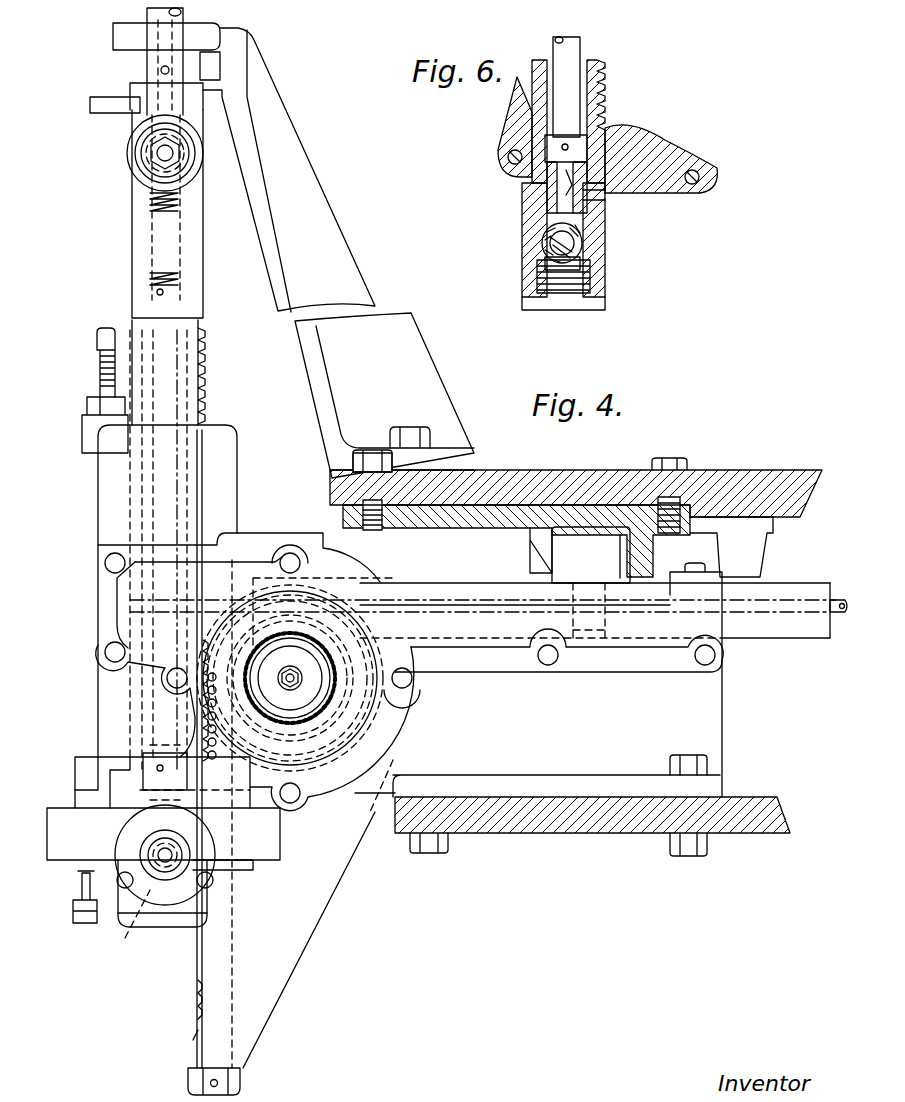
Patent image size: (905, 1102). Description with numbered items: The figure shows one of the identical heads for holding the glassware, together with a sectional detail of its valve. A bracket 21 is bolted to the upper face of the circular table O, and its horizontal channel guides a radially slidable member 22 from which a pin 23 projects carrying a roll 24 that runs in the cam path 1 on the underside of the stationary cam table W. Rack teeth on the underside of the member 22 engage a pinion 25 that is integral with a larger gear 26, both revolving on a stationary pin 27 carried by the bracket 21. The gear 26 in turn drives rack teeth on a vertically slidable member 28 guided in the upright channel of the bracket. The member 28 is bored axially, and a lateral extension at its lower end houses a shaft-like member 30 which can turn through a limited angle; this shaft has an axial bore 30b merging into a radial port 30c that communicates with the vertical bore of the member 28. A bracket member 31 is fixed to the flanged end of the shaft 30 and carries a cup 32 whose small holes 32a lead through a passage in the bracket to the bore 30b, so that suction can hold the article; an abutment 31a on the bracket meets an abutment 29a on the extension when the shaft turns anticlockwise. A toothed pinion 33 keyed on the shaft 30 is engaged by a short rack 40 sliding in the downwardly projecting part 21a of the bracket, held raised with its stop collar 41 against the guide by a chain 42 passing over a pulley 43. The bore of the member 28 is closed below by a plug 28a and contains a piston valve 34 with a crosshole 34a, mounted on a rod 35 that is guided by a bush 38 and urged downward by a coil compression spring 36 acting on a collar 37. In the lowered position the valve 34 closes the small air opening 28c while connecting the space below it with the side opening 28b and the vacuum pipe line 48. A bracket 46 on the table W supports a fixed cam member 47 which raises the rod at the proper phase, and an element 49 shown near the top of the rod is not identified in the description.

In FIG. 4, the cam path 1 is at (553, 503).
In FIG. 4, the bracket 21 is at (708, 724).
In FIG. 6, the bracket 21 is at (612, 130).
In FIG. 4, the downwardly projecting part of the bracket 21a is at (258, 1015).
In FIG. 4, the radially slidable member 22 is at (795, 622).
In FIG. 4, the pin 23 is at (570, 556).
In FIG. 4, the roll 24 is at (617, 577).
In FIG. 4, the pinion 25 is at (352, 700).
In FIG. 4, the gear 26 is at (360, 727).
In FIG. 4, the stationary pin 27 is at (302, 678).
In FIG. 4, the vertically slidable member 28 is at (130, 305).
In FIG. 6, the vertically slidable member 28 is at (602, 82).
In FIG. 6, the plug 28a is at (563, 295).
In FIG. 4, the side opening 28b is at (150, 162).
In FIG. 6, the small opening 28c is at (585, 205).
In FIG. 4, the abutment 29a is at (86, 912).
In FIG. 6, the shaft-like member 30 is at (545, 262).
In FIG. 4, the bore 30b is at (205, 880).
In FIG. 6, the bore 30b is at (578, 250).
In FIG. 6, the port 30c is at (552, 232).
In FIG. 4, the bracket member 31 is at (67, 851).
In FIG. 4, the abutment 31a is at (253, 867).
In FIG. 4, the cup 32 is at (78, 785).
In FIG. 4, the small holes 32a is at (200, 822).
In FIG. 4, the toothed pinion 33 is at (140, 915).
In FIG. 4, the piston valve 34 is at (150, 773).
In FIG. 6, the piston valve 34 is at (545, 195).
In FIG. 6, the crosshole 34a is at (583, 185).
In FIG. 4, the rod 35 is at (170, 240).
In FIG. 6, the rod 35 is at (570, 52).
In FIG. 4, the coil compression spring 36 is at (145, 210).
In FIG. 4, the collar 37 is at (150, 290).
In FIG. 4, the bush 38 is at (135, 90).
In FIG. 4, the short rack 40 is at (197, 1008).
In FIG. 4, the stop collar 41 is at (240, 1080).
In FIG. 4, the chain 42 is at (840, 598).
In FIG. 4, the pulley 43 is at (287, 600).
In FIG. 4, the bracket 46 is at (310, 192).
In FIG. 4, the fixed cam member 47 is at (212, 67).
In FIG. 4, the pipe line 48 is at (160, 15).
In FIG. 4, the handle 49 is at (125, 42).
In FIG. 4, the circular table W is at (760, 490).
In FIG. 4, the circular table O is at (572, 830).